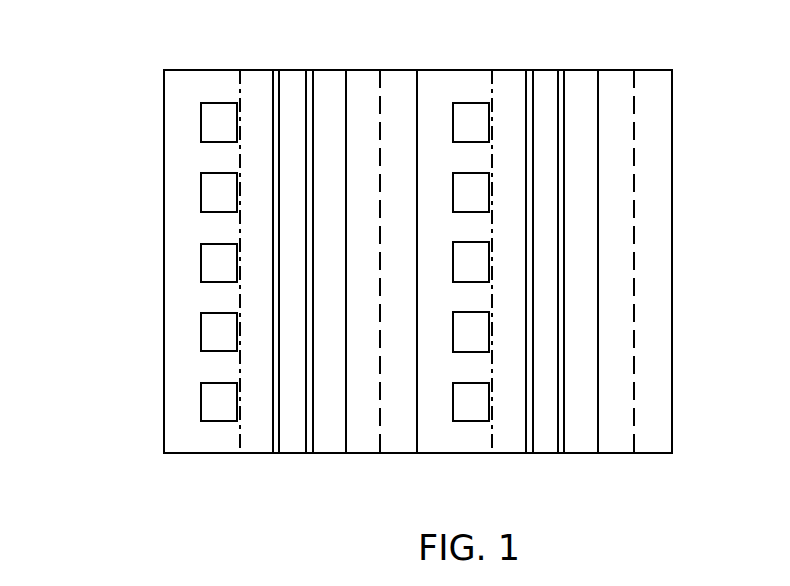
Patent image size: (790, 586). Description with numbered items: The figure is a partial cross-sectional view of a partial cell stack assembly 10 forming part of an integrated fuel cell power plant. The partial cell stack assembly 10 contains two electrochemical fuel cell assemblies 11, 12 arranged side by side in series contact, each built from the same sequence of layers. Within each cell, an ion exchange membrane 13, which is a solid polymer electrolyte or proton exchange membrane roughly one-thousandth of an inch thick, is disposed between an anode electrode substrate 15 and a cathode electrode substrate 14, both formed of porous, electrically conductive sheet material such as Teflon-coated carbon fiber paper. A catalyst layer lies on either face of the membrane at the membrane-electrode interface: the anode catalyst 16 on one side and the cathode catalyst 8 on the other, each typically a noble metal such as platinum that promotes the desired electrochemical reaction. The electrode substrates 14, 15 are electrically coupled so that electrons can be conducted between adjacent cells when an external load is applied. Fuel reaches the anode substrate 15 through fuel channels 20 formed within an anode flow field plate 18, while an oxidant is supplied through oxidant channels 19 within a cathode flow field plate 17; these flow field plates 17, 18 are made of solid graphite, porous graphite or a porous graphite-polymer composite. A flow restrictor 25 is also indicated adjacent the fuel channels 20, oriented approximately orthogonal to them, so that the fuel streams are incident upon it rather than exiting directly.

The partial cell stack assembly 10 is at (112, 68).
The fuel cell assembly 11 is at (263, 486).
The fuel cell assembly 12 is at (577, 478).
The cathode catalyst 8 is at (307, 70).
The ion exchange membrane 13 is at (293, 70).
The cathode electrode substrate 14 is at (326, 70).
The anode electrode substrate 15 is at (255, 70).
The anode catalyst 16 is at (275, 70).
The cathode flow field plate 17 is at (363, 70).
The anode flow field plate 18 is at (194, 86).
The oxidant channels 19 is at (381, 412).
The fuel channels 20 is at (208, 122).
The flow restrictor 25 is at (226, 192).